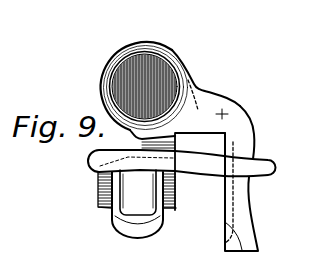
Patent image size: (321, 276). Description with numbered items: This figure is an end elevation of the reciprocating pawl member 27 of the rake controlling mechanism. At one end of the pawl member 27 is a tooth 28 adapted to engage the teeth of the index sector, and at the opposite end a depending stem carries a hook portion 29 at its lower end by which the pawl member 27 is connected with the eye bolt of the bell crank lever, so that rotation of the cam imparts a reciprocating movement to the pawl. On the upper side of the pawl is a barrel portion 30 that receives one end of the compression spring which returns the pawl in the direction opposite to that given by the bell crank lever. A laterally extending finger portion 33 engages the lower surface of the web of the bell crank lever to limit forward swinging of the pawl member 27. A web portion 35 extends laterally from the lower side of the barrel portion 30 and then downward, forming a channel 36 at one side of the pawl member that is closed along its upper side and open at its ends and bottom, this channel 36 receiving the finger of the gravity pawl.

The barrel portion 30 is at (152, 43).
The reciprocating pawl member 27 is at (200, 90).
The web portion 35 is at (249, 127).
The finger portion 33 is at (267, 164).
The channel 36 is at (208, 133).
The tooth 28 is at (100, 207).
The hook portion 29 is at (148, 237).